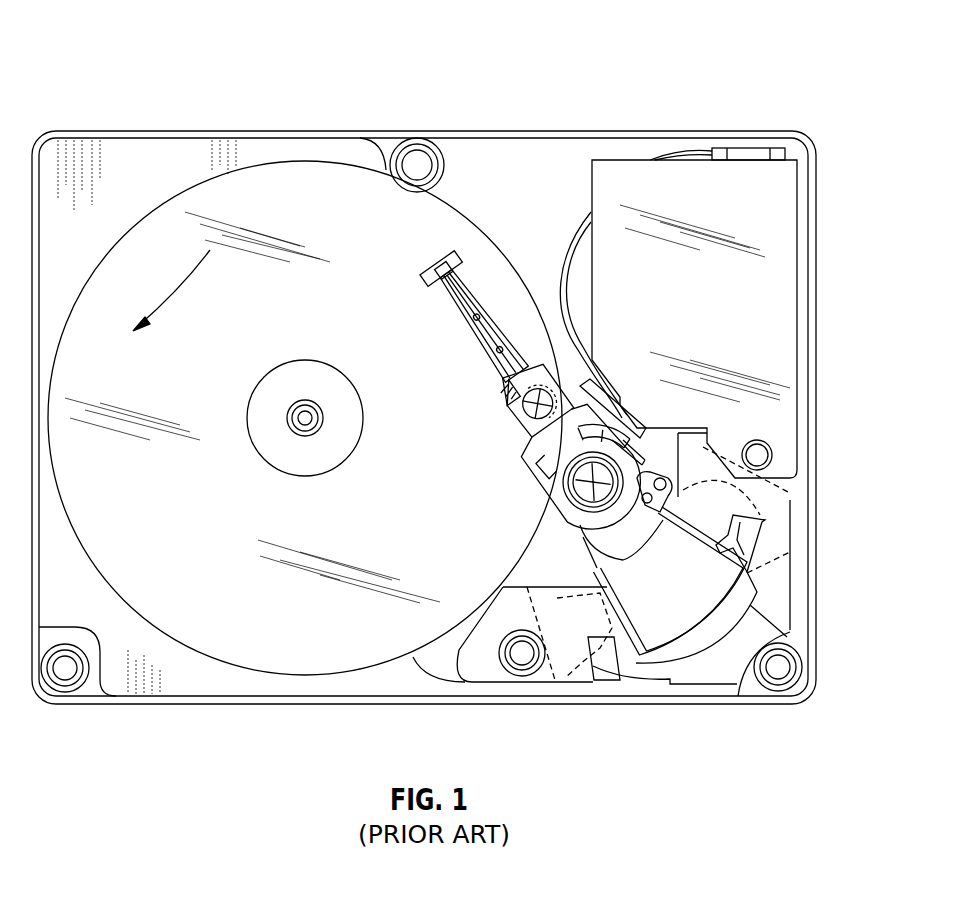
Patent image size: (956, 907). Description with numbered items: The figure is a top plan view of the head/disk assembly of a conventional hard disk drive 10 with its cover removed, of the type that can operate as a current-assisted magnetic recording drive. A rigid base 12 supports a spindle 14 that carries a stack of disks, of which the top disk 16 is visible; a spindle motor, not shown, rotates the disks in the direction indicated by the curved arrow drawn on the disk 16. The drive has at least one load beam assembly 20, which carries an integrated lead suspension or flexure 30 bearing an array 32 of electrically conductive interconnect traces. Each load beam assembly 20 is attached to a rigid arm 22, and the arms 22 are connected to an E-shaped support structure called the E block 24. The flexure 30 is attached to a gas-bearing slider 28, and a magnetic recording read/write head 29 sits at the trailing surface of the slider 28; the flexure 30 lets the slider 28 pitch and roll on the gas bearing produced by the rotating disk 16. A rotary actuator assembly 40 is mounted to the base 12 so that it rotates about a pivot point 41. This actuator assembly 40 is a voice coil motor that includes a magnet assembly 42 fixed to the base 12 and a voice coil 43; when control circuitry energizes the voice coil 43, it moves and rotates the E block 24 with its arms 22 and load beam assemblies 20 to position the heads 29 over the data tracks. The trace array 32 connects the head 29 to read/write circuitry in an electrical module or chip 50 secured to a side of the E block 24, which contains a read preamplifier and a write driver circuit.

The disk drive 10 is at (100, 60).
The rigid base 12 is at (188, 704).
The spindle 14 is at (307, 360).
The top disk 16 is at (300, 658).
The load beam assembly 20 is at (493, 393).
The rigid arm 22 is at (513, 422).
The E block 24 is at (540, 470).
The gas-bearing slider 28 is at (460, 262).
The read/write head 29 is at (437, 267).
The flexure 30 is at (457, 282).
The array of interconnect traces 32 is at (483, 317).
The rotary actuator assembly 40 is at (536, 550).
The pivot point 41 is at (553, 505).
The magnet assembly 42 is at (703, 457).
The voice coil 43 is at (748, 570).
The electrical module or chip 50 is at (643, 428).